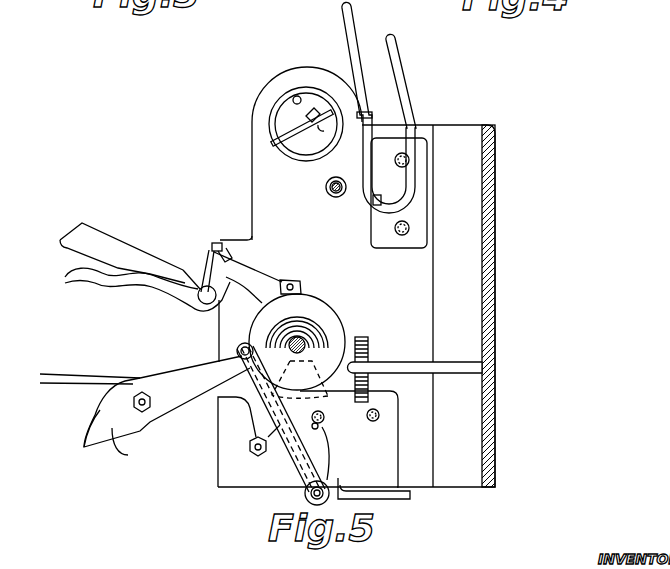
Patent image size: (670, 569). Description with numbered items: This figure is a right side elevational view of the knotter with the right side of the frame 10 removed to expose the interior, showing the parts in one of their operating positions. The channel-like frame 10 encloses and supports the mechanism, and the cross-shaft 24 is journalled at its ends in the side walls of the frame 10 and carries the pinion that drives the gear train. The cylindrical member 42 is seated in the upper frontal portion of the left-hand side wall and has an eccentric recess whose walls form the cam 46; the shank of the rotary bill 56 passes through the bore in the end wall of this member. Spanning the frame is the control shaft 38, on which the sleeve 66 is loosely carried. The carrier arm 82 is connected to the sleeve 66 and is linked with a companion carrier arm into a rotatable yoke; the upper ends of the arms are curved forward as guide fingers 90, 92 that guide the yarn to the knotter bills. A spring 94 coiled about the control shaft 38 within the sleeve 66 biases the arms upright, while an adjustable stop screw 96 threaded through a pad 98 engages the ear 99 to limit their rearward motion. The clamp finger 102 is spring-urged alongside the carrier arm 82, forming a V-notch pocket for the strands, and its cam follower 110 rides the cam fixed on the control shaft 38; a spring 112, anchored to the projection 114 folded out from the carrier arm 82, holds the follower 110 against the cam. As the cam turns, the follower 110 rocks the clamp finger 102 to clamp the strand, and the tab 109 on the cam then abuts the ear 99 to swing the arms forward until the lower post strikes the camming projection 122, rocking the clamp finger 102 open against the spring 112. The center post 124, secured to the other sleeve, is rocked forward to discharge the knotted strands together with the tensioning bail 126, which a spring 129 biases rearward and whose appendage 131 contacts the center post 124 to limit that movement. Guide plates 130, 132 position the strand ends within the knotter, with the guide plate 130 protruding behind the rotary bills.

The frame 10 is at (502, 210).
The cross-shaft 24 is at (334, 198).
The control shaft 38 is at (330, 316).
The cylindrical member 42 is at (268, 115).
The cam 46 is at (297, 96).
The rotary bill 56 is at (336, 106).
The sleeve 66 is at (301, 328).
The carrier arm 82 is at (203, 387).
The guide finger 90 is at (128, 447).
The guide finger 92 is at (102, 414).
The spring 94 is at (302, 340).
The adjustable stop screw 96 is at (369, 350).
The pad 98 is at (451, 368).
The ear 99 is at (262, 282).
The clamp finger 102 is at (107, 382).
The tab 109 is at (290, 281).
The cam follower 110 is at (332, 430).
The spring 112 is at (285, 458).
The projection 114 is at (237, 354).
The camming projection 122 is at (338, 480).
The center post 124 is at (117, 248).
The tensioning bail 126 is at (106, 292).
The spring 129 is at (212, 252).
The guide plate 130 is at (348, 28).
The appendage 131 is at (220, 246).
The guide plate 132 is at (392, 44).